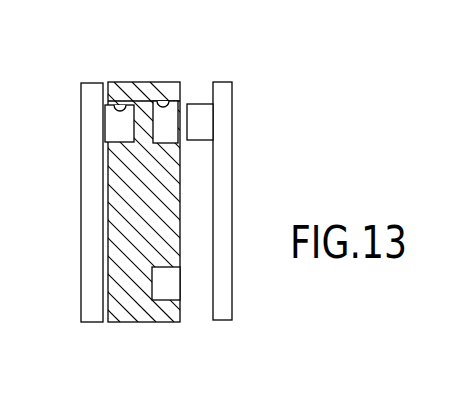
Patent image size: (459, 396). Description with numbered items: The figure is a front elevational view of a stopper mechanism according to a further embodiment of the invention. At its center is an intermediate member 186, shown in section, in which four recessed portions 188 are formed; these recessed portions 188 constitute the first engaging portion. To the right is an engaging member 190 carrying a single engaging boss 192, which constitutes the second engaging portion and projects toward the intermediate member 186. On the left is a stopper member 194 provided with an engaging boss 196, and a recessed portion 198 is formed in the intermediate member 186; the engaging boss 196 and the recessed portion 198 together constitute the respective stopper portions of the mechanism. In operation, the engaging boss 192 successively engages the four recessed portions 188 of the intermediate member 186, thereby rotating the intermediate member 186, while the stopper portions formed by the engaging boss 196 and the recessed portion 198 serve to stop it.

The intermediate member 186 is at (135, 315).
The recessed portions 188 is at (170, 108).
The engaging member 190 is at (223, 115).
The engaging boss 192 is at (197, 108).
The stopper member 194 is at (88, 101).
The engaging boss 196 is at (115, 128).
The recessed portion 198 is at (120, 108).